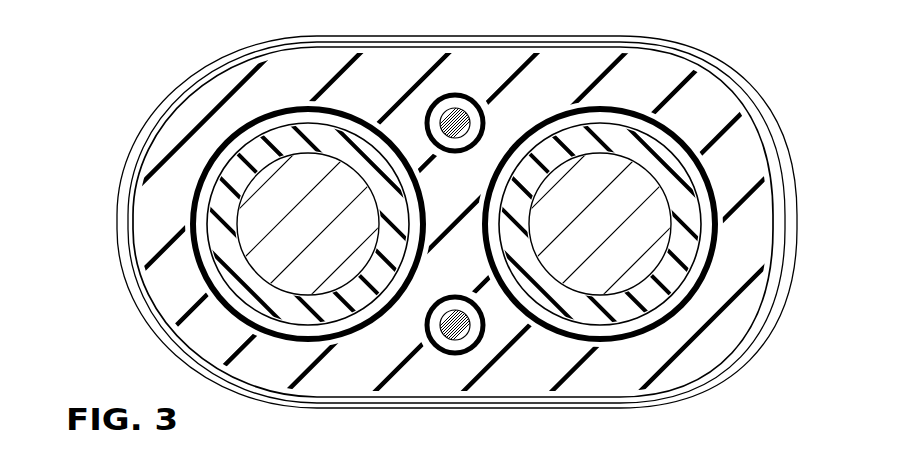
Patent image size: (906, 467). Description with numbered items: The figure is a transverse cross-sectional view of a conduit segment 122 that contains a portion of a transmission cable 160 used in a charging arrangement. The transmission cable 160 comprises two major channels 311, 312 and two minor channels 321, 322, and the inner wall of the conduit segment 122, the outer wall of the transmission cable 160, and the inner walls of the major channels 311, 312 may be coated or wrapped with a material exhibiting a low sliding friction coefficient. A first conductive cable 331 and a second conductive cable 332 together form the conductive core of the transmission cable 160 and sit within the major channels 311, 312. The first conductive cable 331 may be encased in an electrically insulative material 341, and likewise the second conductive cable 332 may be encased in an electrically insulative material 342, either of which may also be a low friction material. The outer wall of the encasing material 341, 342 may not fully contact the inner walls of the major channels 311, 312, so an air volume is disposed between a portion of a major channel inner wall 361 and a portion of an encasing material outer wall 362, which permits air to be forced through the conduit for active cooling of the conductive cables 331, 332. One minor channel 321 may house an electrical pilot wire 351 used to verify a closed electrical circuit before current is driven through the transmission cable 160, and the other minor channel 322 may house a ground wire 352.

The conduit segment 122 is at (245, 42).
The transmission cable 160 is at (213, 78).
The major channel 311 is at (212, 146).
The major channel 312 is at (673, 120).
The minor channel 321 is at (470, 86).
The minor channel 322 is at (436, 357).
The first conductive cable 331 is at (331, 230).
The second conductive cable 332 is at (616, 230).
The electrically insulative material 341 is at (208, 195).
The electrically insulative material 342 is at (690, 177).
The electrical pilot wire 351 is at (471, 122).
The ground wire 352 is at (457, 339).
The major channel inner wall 361 is at (270, 125).
The encasing material outer wall 362 is at (212, 275).